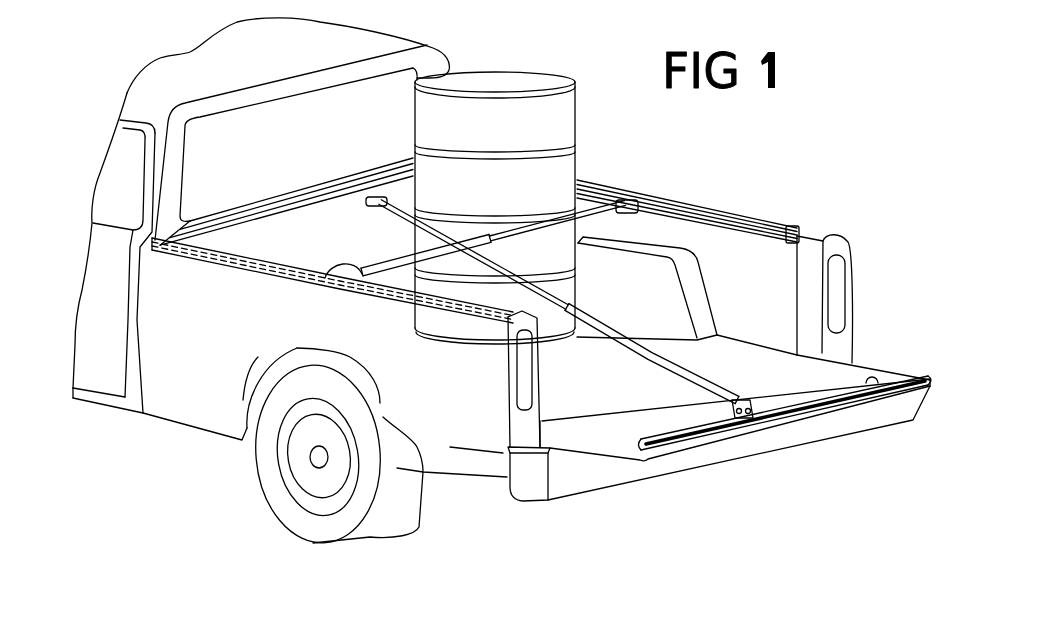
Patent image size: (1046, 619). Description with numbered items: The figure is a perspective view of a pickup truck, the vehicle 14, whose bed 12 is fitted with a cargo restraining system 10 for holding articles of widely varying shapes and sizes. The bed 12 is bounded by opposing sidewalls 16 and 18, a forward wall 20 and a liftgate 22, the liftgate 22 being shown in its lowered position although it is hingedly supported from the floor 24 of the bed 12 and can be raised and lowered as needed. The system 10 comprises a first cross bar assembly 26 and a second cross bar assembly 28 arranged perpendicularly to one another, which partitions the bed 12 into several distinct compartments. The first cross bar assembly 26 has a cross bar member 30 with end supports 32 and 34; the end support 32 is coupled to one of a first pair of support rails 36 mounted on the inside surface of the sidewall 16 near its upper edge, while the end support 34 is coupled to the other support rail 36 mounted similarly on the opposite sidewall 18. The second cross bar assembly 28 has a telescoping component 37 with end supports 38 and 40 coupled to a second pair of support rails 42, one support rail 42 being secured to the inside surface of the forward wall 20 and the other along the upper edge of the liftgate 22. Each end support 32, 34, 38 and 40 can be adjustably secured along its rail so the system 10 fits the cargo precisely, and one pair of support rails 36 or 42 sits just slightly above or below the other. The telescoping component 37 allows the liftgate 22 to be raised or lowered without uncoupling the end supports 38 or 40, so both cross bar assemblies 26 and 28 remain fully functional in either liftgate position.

The cargo restraining system 10 is at (545, 305).
The bed 12 is at (512, 290).
The vehicle 14 is at (119, 414).
The sidewall 16 is at (215, 398).
The sidewall 18 is at (853, 267).
The forward wall 20 is at (406, 192).
The liftgate 22 is at (855, 380).
The floor 24 is at (726, 345).
The first cross bar assembly 26 is at (609, 186).
The second cross bar assembly 28 is at (687, 408).
The cross bar member 30 is at (372, 262).
The end support 32 is at (360, 274).
The end support 34 is at (625, 200).
The first pair of support rails 36 is at (787, 225).
The telescoping component 37 is at (642, 366).
The end support 38 is at (751, 412).
The end support 40 is at (375, 196).
The second pair of support rails 42 is at (249, 218).